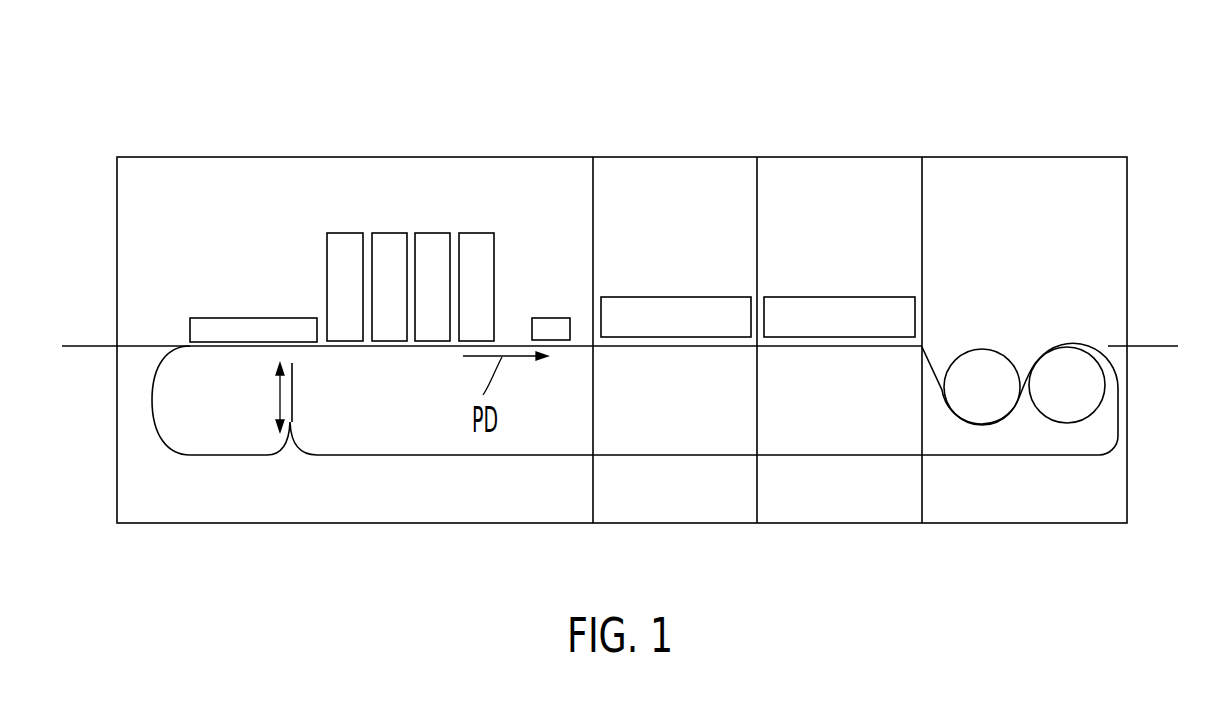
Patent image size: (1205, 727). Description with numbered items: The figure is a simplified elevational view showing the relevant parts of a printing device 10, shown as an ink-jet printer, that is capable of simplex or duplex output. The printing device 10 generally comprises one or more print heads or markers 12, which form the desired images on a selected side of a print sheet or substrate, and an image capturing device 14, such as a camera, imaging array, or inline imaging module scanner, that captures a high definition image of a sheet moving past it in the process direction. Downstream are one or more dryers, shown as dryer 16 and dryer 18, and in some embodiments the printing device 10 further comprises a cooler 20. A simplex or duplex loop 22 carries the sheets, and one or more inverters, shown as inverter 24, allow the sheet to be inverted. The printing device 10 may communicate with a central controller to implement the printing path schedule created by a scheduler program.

The printing device 10 is at (150, 121).
The print head 12 is at (317, 174).
The image capturing device 14 is at (560, 318).
The dryer 16 is at (675, 296).
The dryer 18 is at (840, 296).
The cooler 20 is at (1016, 119).
The simplex or duplex loop 22 is at (826, 494).
The inverter 24 is at (310, 419).